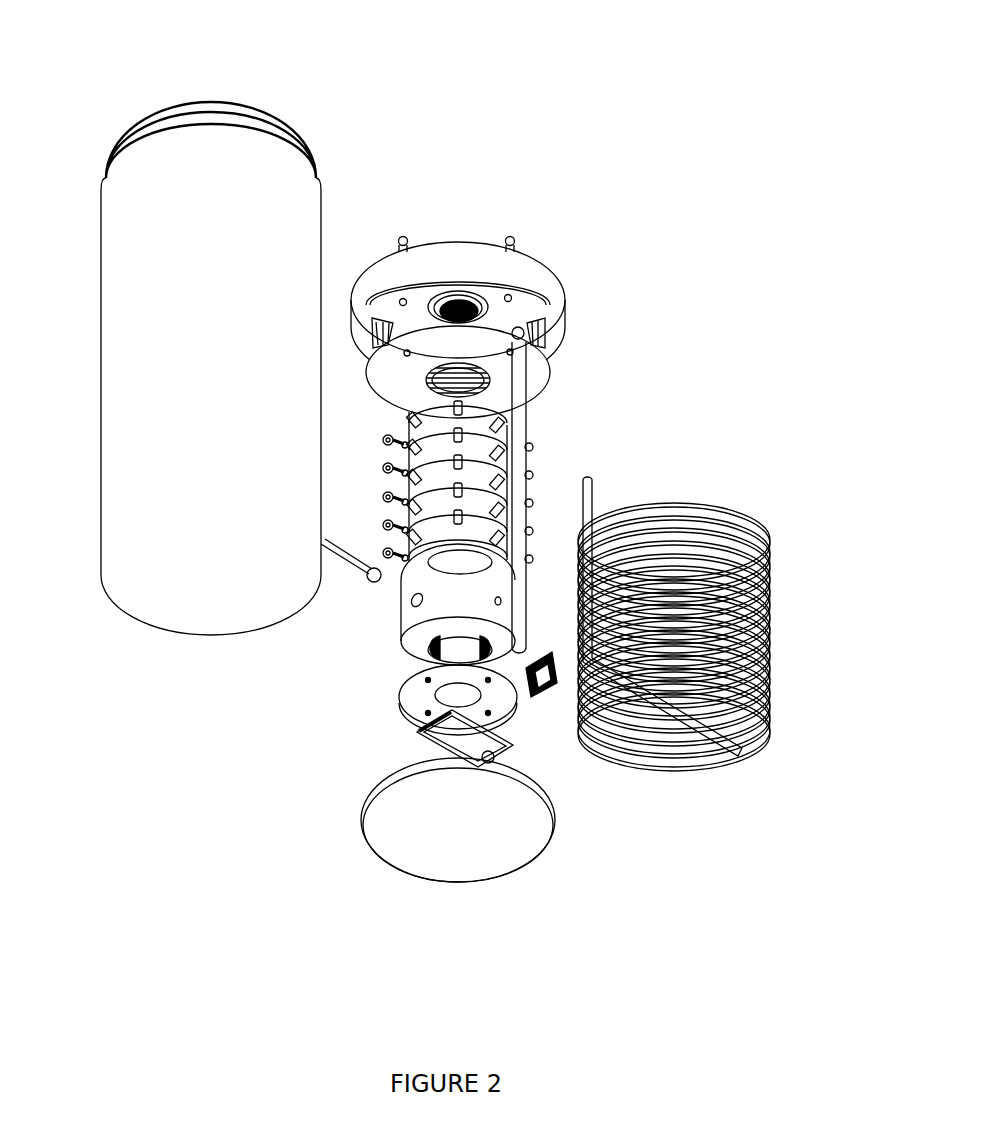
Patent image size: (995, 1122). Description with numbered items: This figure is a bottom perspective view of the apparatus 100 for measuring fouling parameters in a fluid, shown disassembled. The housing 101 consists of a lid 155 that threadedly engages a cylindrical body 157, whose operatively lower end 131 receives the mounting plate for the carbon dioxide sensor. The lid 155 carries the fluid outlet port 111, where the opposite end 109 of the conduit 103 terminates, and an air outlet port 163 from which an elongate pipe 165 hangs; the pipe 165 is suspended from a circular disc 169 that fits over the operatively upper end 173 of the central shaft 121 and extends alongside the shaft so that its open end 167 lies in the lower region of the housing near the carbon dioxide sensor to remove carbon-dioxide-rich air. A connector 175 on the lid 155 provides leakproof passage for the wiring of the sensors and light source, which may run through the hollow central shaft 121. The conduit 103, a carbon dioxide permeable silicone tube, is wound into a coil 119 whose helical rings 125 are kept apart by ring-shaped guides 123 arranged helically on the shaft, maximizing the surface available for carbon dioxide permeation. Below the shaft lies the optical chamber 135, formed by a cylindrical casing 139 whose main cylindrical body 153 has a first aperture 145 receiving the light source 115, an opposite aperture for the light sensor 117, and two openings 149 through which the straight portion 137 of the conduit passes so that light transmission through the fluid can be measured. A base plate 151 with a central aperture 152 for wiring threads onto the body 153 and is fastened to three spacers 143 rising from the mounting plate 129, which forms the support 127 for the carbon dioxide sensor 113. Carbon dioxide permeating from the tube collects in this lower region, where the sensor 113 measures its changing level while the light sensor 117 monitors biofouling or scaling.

The apparatus 100 is at (185, 65).
The housing 101 is at (373, 257).
The cylindrical body 157 is at (130, 288).
The operatively lower end 131 is at (168, 630).
The fluid outlet port 111 is at (401, 236).
The air outlet port 163 is at (511, 236).
The lid 155 is at (520, 270).
The connector 175 is at (452, 302).
The elongate pipe 165 is at (520, 422).
The operatively upper end 173 is at (485, 408).
The circular disc 169 is at (535, 368).
The central shaft 121 is at (455, 448).
The guides 123 is at (384, 525).
The light source 115 is at (368, 566).
The optical chamber 135 is at (473, 585).
The main cylindrical body 153 is at (440, 612).
The first aperture 145 is at (412, 607).
The openings 149 is at (500, 599).
The cylindrical casing 139 is at (493, 618).
The open end 167 is at (522, 657).
The light sensor 117 is at (547, 687).
The base plate 151 is at (492, 703).
The central aperture 152 is at (453, 693).
The carbon dioxide sensor 113 is at (427, 743).
The spacers 143 is at (494, 760).
The support 127 is at (522, 837).
The mounting plate 129 is at (515, 862).
The conduit 103 is at (715, 505).
The coil 119 is at (778, 615).
The helical rings 125 is at (771, 670).
The opposite end 109 is at (594, 478).
The straight portion 137 is at (727, 747).